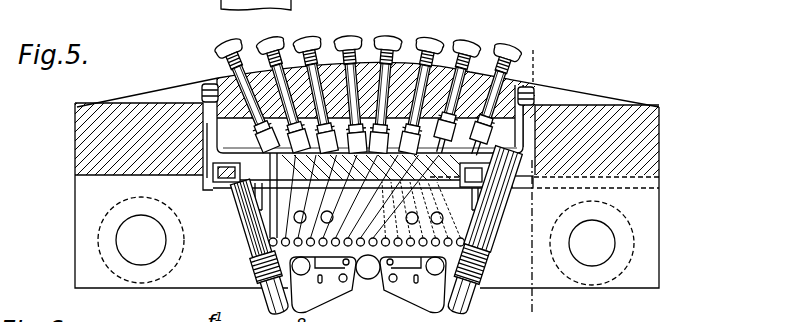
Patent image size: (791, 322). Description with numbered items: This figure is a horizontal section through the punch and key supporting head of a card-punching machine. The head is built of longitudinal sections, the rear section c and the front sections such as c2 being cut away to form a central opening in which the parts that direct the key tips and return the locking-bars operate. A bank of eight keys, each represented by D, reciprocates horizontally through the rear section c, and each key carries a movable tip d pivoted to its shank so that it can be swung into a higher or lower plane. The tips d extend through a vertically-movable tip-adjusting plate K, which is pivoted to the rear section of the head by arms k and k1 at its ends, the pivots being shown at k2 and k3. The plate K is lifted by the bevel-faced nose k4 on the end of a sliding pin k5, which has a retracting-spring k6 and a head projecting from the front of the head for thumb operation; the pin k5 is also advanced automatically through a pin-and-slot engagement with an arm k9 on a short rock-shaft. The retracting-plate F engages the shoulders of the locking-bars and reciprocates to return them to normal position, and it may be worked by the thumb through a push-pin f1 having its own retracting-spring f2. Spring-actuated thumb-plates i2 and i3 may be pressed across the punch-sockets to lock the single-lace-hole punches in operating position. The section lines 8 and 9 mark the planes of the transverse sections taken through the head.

The section line 8 8 is at (226, 45).
The arm k is at (205, 122).
The pivot k2 is at (209, 85).
The pivot k3 is at (522, 90).
The arm k1 is at (520, 120).
The bevel-faced nose k4 is at (550, 140).
The rear section c is at (659, 129).
The front section c2 is at (652, 250).
The tip-adjusting plate K is at (370, 119).
The movable tip d is at (462, 152).
The key D is at (462, 63).
The section line 9 9 is at (532, 176).
The retracting-plate F is at (215, 189).
The push-pin f1 is at (254, 232).
The retracting-spring f2 is at (252, 268).
The sliding pin k5 is at (492, 230).
The retracting-spring k6 is at (478, 280).
The arm k9 is at (524, 170).
The thumb-plate i2 is at (323, 285).
The thumb-plate i3 is at (413, 285).